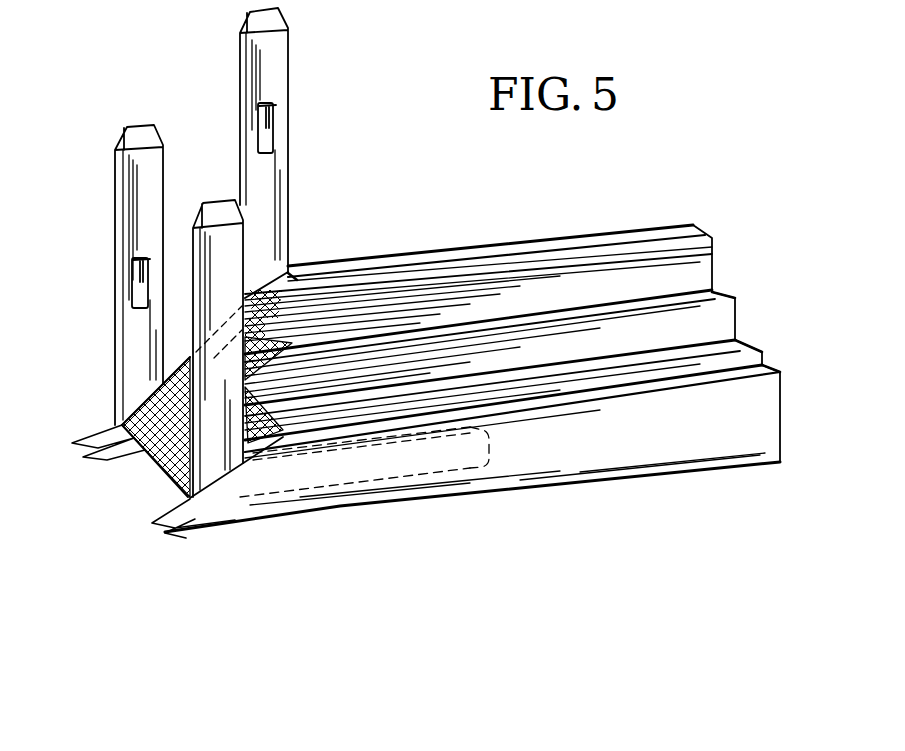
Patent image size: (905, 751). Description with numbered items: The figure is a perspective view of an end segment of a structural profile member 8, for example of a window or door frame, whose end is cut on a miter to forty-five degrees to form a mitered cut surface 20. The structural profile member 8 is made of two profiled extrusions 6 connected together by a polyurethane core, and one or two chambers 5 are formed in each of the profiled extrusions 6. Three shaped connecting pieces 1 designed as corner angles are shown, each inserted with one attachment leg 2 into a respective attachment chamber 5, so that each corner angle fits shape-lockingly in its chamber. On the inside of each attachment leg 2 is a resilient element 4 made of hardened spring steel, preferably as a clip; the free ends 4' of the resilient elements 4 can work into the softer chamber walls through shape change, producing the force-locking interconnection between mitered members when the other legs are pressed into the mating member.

The shaped connecting piece 1 is at (104, 128).
The attachment leg 2 is at (283, 70).
The resilient element 4 is at (202, 205).
The free end of resilient element 4' is at (206, 185).
The attachment chamber 5 is at (284, 256).
The profiled extrusion 6 is at (562, 248).
The structural profile member 8 is at (728, 267).
The mitered cut surface 20 is at (95, 422).